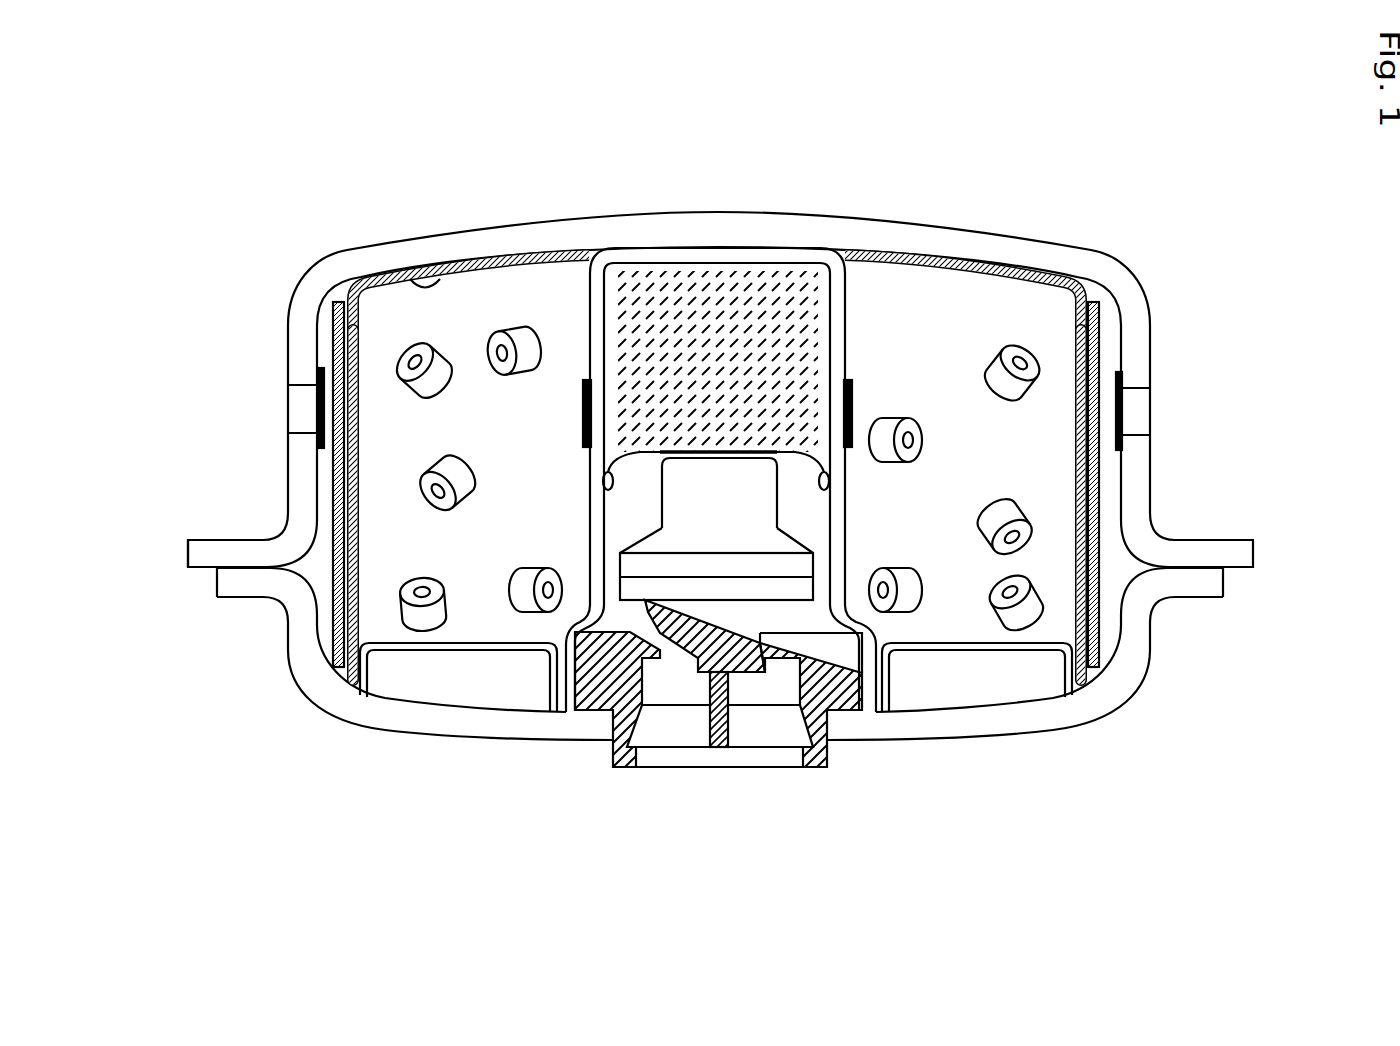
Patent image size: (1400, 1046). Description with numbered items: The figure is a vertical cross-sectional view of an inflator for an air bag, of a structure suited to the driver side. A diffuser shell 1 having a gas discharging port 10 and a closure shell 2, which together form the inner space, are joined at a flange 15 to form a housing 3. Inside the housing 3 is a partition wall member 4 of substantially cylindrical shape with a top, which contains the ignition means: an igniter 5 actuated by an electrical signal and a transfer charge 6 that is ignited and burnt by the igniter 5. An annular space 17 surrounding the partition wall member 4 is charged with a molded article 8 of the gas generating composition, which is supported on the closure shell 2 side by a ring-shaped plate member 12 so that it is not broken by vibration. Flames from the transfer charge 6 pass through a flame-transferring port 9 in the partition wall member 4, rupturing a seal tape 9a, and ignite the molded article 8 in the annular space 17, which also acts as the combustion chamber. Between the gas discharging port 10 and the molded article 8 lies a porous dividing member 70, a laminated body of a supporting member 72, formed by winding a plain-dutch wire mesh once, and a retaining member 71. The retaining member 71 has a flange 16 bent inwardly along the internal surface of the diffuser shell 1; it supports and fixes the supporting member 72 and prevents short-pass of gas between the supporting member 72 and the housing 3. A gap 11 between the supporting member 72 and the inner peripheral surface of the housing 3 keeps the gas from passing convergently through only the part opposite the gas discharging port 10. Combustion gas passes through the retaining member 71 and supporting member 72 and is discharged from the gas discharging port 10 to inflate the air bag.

The diffuser shell 1 is at (1157, 485).
The closure shell 2 is at (1143, 610).
The housing 3 is at (760, 476).
The partition wall member 4 is at (650, 248).
The igniter 5 is at (727, 510).
The transfer charge 6 is at (724, 372).
The molded article of the gas generating composition 8 is at (520, 330).
The flame-transferring port 9 is at (850, 410).
The seal tape 9a is at (583, 400).
The gas discharging port 10 is at (298, 403).
The gap 11 is at (317, 570).
The ring-shaped plate member 12 is at (423, 653).
The flange 15 is at (168, 523).
The flange 16 is at (415, 278).
The annular space 17 is at (547, 462).
The porous dividing member 70 is at (613, 491).
The retaining member 71 is at (333, 455).
The supporting member 72 is at (338, 505).